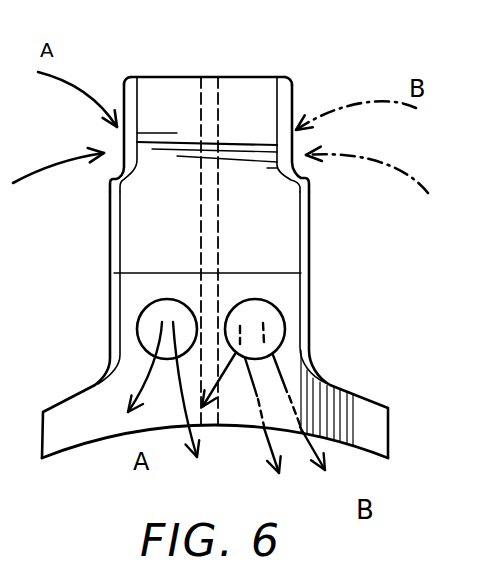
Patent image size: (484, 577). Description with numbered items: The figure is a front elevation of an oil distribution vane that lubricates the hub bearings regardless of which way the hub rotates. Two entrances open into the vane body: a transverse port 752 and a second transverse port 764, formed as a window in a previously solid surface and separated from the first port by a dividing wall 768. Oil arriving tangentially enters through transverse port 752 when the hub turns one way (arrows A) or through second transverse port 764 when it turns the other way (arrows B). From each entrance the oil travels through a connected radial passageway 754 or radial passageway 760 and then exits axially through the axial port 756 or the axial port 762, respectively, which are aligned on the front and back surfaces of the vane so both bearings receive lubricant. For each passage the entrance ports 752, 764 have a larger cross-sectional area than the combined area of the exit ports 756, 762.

The transverse port 752 is at (118, 143).
The radial passageway 754 is at (158, 253).
The axial port 756 is at (141, 318).
The radial passageway 760 is at (264, 282).
The axial port 762 is at (268, 315).
The second transverse port 764 is at (289, 99).
The dividing wall 768 is at (209, 74).